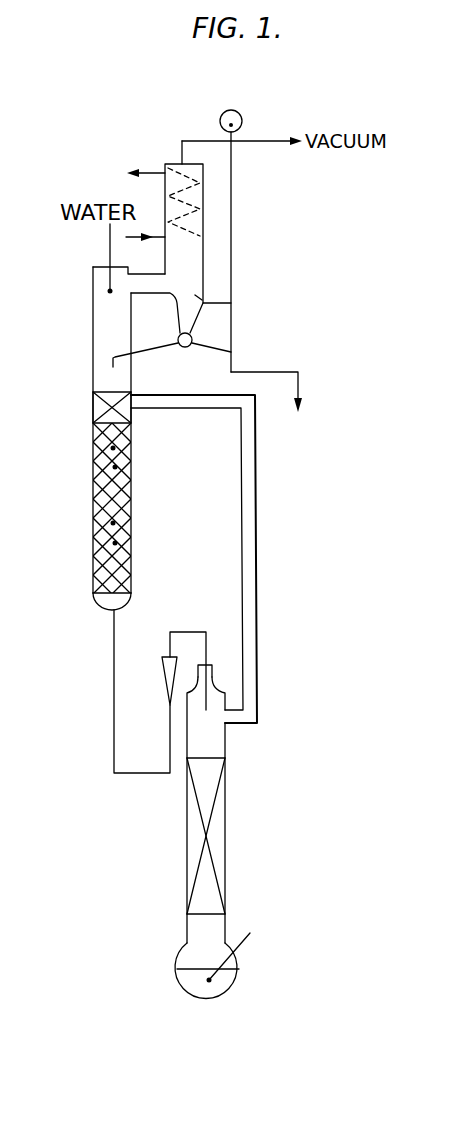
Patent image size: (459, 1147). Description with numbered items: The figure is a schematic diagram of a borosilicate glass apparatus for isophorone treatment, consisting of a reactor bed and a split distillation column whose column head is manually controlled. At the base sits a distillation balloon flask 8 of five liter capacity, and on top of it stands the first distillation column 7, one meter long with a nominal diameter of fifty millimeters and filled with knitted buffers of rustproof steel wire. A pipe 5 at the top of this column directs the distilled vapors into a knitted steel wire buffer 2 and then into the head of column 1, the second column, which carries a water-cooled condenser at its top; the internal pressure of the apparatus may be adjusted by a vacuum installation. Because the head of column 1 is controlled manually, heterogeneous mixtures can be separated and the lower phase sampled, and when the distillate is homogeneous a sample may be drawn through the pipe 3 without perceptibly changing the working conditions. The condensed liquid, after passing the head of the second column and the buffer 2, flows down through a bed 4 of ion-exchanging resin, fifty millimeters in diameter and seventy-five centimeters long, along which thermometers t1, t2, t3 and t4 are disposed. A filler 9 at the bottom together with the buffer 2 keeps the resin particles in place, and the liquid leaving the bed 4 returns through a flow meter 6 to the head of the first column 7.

The head of column 1 is at (93, 297).
The knitted buffer 2 is at (93, 407).
The pipe 3 is at (300, 375).
The bed of ion-exchanging resin 4 is at (93, 497).
The pipe 5 is at (258, 580).
The flow meter 6 is at (163, 683).
The distillation column 7 is at (227, 833).
The distillation balloon flask 8 is at (240, 978).
The filler 9 is at (114, 600).
The thermometer t1 is at (113, 448).
The thermometer t2 is at (115, 467).
The thermometer t3 is at (113, 523).
The thermometer t4 is at (115, 543).